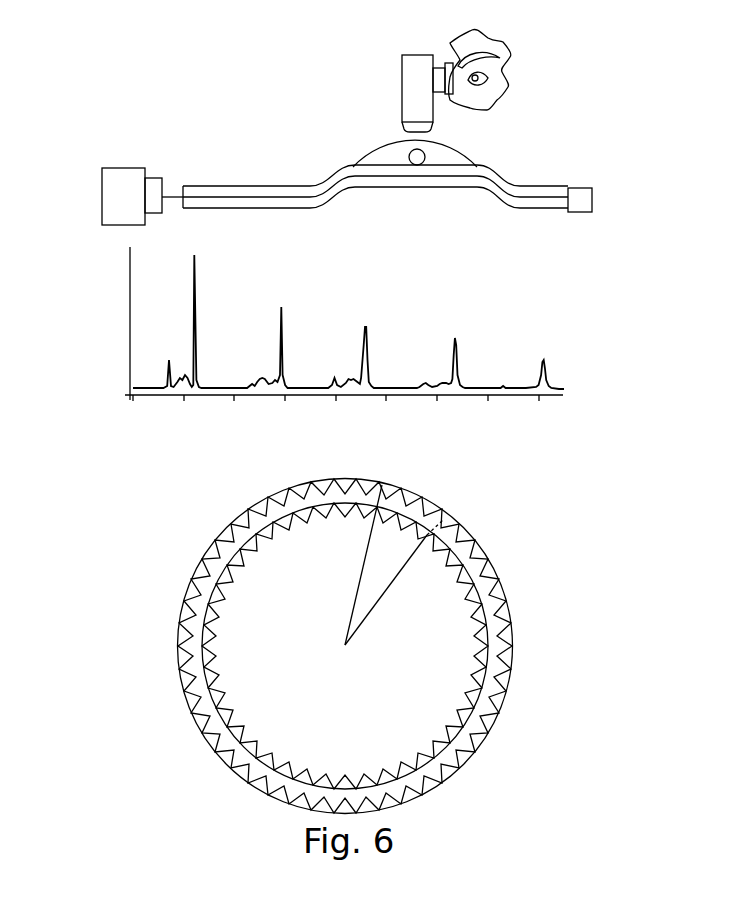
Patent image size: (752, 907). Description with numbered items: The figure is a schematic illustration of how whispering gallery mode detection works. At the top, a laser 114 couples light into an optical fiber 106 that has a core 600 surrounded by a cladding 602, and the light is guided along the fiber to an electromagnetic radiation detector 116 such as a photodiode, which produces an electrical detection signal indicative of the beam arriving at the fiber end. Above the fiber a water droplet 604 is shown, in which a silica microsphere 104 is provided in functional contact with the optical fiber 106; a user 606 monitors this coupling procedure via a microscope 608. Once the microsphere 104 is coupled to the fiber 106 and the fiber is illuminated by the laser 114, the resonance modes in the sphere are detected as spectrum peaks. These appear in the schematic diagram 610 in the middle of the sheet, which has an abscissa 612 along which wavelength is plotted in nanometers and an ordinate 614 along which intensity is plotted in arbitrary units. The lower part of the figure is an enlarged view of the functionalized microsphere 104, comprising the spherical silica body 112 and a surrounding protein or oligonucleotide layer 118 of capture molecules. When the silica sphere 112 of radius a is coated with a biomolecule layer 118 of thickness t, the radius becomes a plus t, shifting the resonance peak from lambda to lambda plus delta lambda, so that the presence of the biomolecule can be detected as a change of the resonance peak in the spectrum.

The microsphere 104 is at (426, 155).
The optical fiber 106 is at (176, 142).
The spherical silica body 112 is at (223, 625).
The laser 114 is at (118, 170).
The electromagnetic radiation detector 116 is at (580, 193).
The protein or oligonucleotide layer 118 is at (203, 557).
The core 600 is at (264, 195).
The cladding 602 is at (222, 195).
The water droplet 604 is at (362, 157).
The user 606 is at (483, 43).
The microscope 608 is at (410, 75).
The schematic diagram 610 is at (500, 307).
The abscissa 612 is at (558, 399).
The ordinate 614 is at (130, 277).